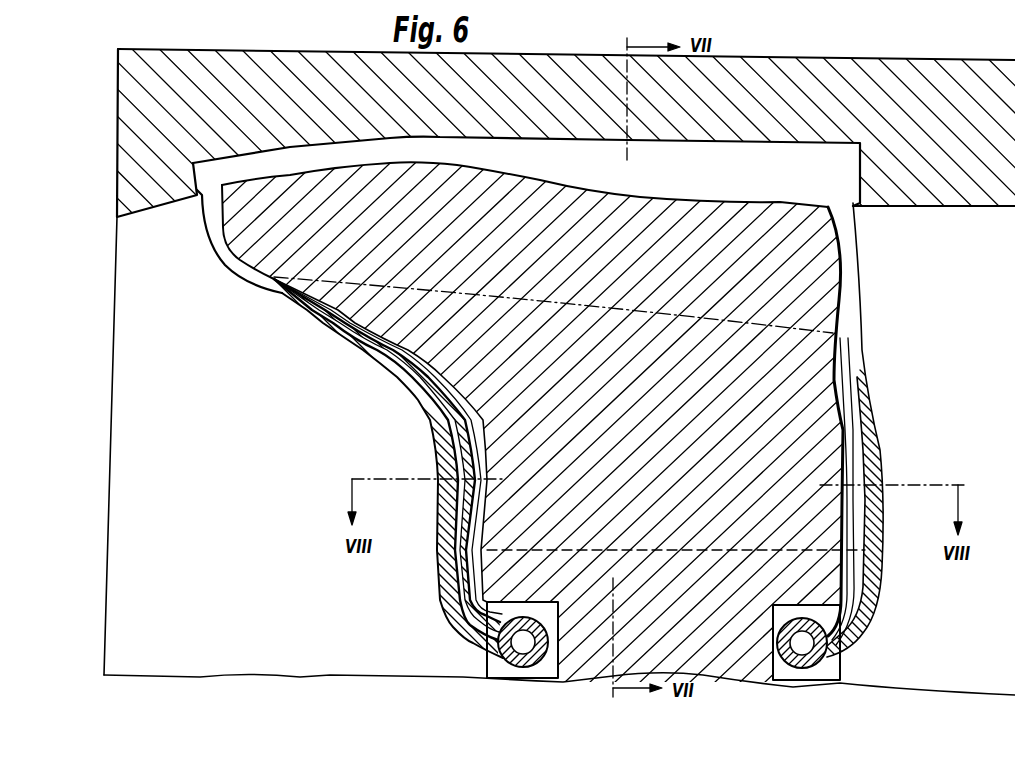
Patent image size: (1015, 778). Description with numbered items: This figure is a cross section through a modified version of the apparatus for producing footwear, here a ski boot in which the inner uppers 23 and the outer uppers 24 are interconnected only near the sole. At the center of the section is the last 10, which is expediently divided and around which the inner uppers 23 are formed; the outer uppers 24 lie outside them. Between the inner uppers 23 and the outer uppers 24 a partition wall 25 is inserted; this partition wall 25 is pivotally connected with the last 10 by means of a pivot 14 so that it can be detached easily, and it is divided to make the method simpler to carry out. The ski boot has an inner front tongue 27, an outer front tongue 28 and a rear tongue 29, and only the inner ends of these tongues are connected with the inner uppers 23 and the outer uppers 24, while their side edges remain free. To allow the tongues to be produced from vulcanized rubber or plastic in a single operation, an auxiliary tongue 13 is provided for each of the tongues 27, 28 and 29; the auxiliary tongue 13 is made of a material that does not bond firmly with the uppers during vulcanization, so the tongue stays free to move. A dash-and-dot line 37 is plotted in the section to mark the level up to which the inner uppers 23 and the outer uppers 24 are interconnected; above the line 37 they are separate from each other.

The last 10 is at (728, 667).
The auxiliary tongue 13 is at (475, 590).
The pivot 14 is at (487, 675).
The inner uppers 23 is at (840, 408).
The outer uppers 24 is at (858, 380).
The partition wall 25 is at (468, 525).
The inner front tongue 27 is at (473, 432).
The outer front tongue 28 is at (423, 357).
The rear tongue 29 is at (863, 570).
The dash-and-dot line 37 is at (723, 318).